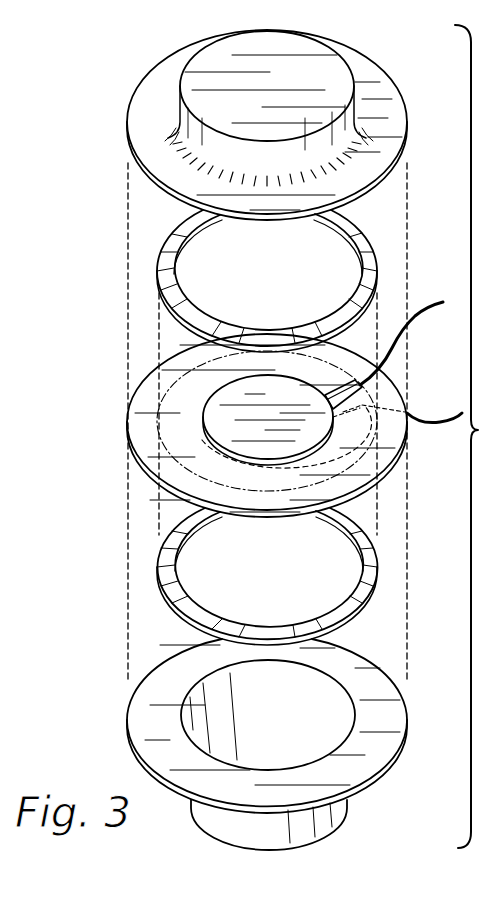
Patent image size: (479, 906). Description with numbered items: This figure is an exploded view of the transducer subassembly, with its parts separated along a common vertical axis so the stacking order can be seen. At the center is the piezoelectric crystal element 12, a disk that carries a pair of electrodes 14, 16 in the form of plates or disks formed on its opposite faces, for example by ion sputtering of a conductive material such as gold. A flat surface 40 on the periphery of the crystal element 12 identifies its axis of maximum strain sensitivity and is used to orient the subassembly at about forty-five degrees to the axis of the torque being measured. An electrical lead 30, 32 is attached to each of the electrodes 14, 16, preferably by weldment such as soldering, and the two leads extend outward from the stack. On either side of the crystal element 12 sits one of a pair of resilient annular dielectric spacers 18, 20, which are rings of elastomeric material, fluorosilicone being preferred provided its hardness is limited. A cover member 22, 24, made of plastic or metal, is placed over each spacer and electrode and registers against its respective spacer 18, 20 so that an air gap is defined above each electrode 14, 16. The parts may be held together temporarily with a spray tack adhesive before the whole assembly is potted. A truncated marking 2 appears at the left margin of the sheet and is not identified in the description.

The transducer assembly 2 is at (240, 436).
The piezoelectric crystal element 12 is at (274, 385).
The electrode 14 is at (235, 415).
The electrode 16 is at (228, 463).
The resilient annular dielectric spacer 18 is at (165, 240).
The resilient annular dielectric spacer 20 is at (163, 600).
The cover member 22 is at (150, 73).
The cover member 24 is at (132, 753).
The electrical lead 30 is at (430, 310).
The electrical lead 32 is at (437, 423).
The flat surface 40 is at (358, 383).